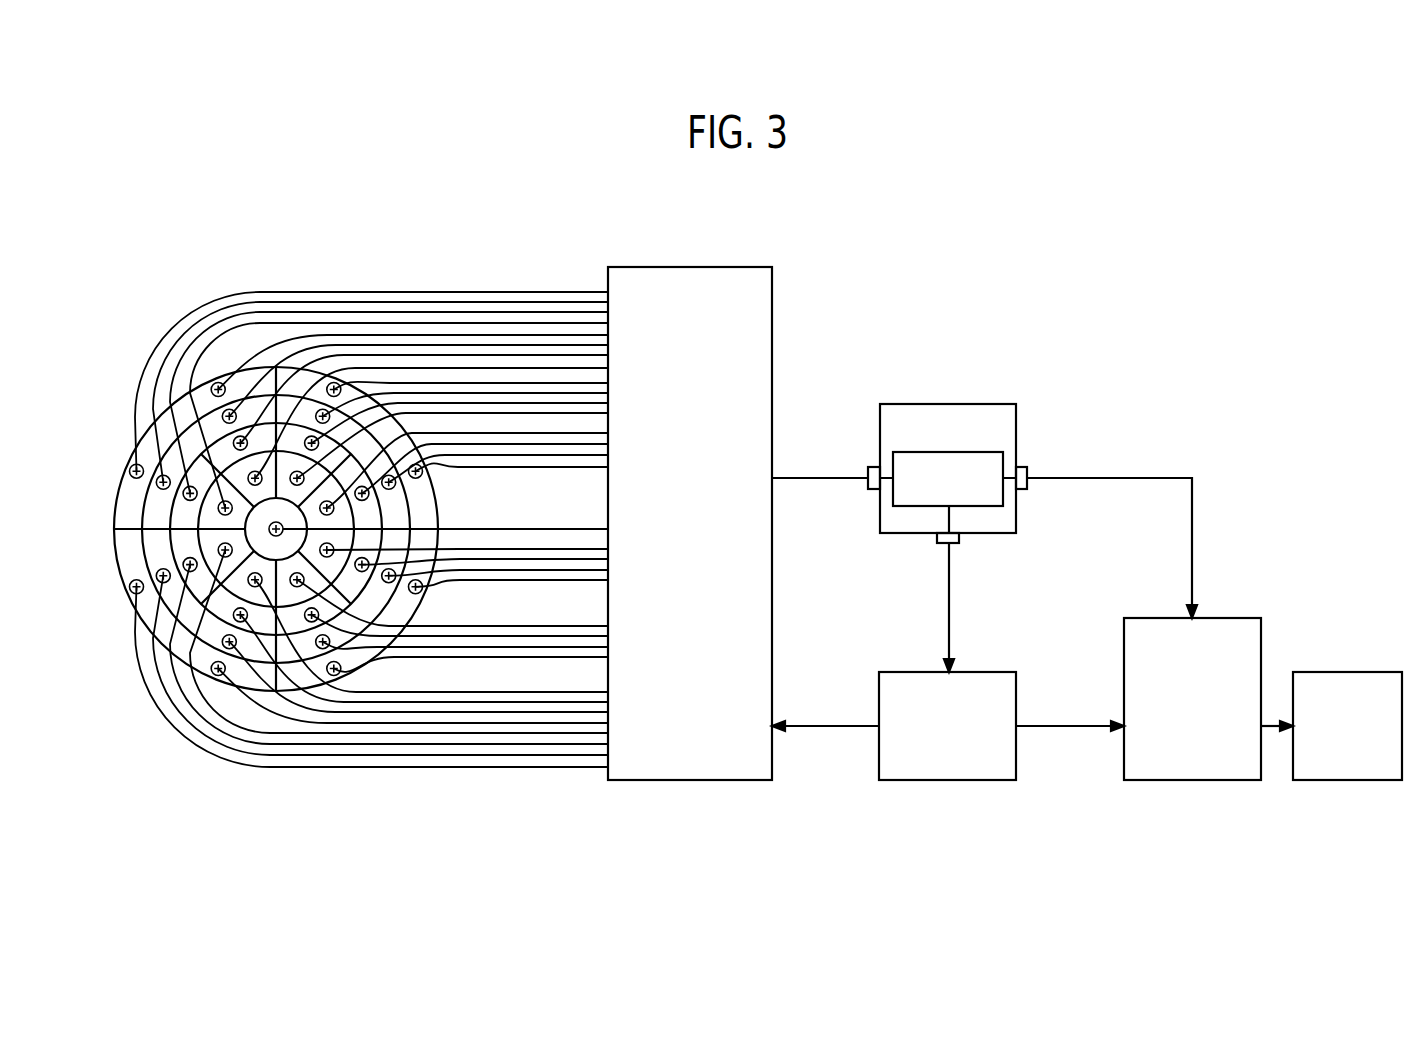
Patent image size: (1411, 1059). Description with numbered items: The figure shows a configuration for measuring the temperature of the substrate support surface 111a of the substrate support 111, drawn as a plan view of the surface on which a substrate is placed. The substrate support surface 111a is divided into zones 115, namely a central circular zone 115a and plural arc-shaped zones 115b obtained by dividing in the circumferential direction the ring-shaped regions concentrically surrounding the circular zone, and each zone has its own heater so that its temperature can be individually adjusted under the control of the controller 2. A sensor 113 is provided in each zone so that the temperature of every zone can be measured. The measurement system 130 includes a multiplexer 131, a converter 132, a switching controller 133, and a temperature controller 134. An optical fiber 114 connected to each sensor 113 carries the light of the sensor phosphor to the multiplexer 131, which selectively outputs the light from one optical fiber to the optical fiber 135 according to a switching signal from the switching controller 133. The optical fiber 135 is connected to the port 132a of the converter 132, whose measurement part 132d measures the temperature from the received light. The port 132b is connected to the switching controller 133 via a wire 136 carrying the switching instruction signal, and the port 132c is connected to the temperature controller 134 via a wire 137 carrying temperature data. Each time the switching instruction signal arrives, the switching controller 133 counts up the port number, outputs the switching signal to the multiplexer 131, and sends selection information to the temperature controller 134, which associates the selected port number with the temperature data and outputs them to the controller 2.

The controller 2 is at (1336, 672).
The substrate support 111 is at (251, 526).
The substrate support surface 111a is at (123, 473).
The sensor 113 is at (133, 594).
The optical fiber 114 is at (489, 770).
The zone 115 is at (324, 442).
The circular zone 115a is at (284, 526).
The arc-shaped zone 115b is at (205, 401).
The measurement system 130 is at (955, 242).
The multiplexer 131 is at (712, 267).
The converter 132 is at (934, 466).
The port 132a is at (874, 467).
The port 132b is at (960, 538).
The port 132c is at (1021, 466).
The measurement part 132d is at (892, 497).
The switching controller 133 is at (990, 672).
The temperature controller 134 is at (1228, 618).
The optical fiber 135 is at (830, 478).
The wire 136 is at (948, 562).
The wire 137 is at (1130, 479).